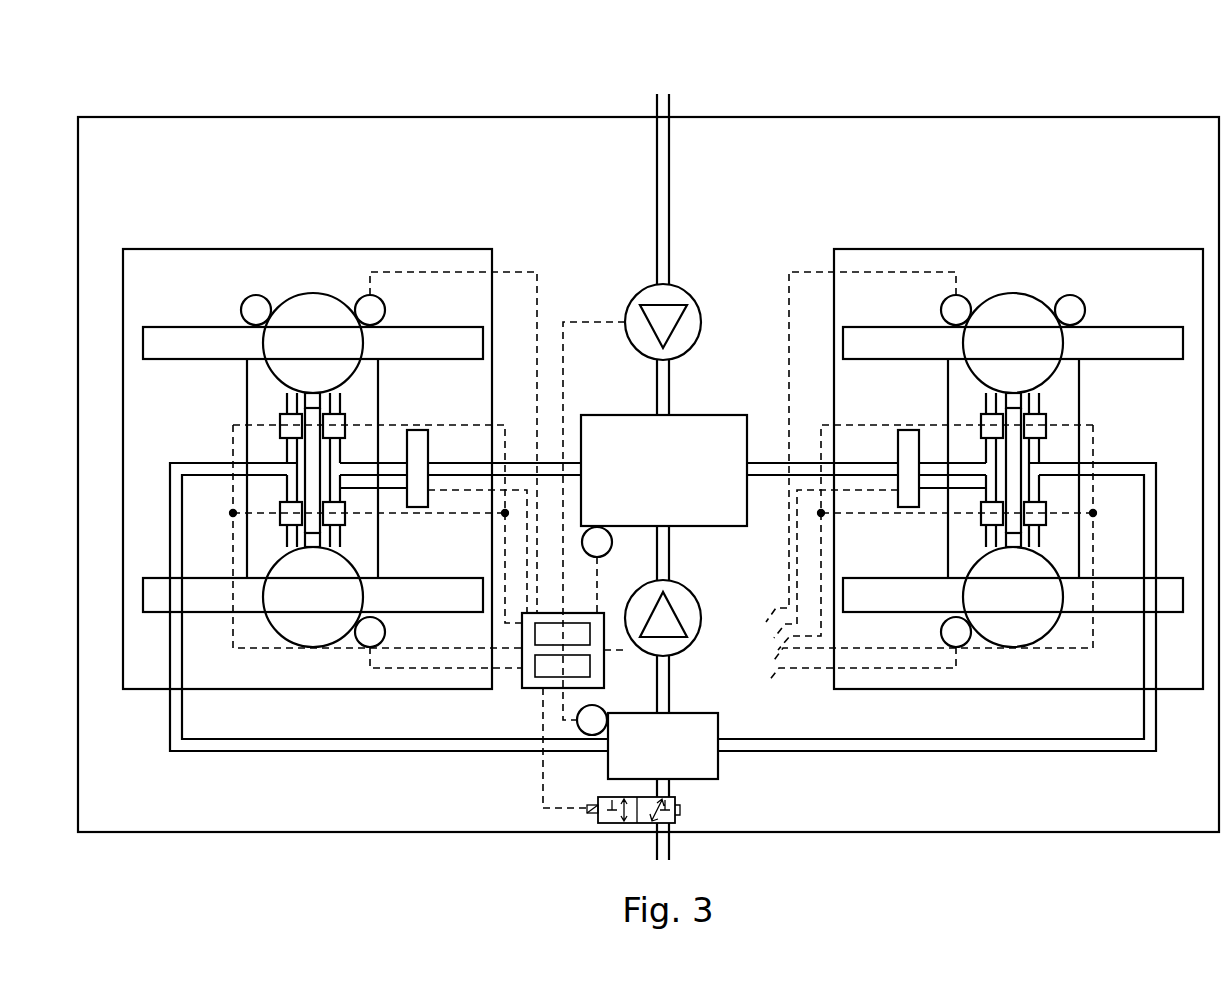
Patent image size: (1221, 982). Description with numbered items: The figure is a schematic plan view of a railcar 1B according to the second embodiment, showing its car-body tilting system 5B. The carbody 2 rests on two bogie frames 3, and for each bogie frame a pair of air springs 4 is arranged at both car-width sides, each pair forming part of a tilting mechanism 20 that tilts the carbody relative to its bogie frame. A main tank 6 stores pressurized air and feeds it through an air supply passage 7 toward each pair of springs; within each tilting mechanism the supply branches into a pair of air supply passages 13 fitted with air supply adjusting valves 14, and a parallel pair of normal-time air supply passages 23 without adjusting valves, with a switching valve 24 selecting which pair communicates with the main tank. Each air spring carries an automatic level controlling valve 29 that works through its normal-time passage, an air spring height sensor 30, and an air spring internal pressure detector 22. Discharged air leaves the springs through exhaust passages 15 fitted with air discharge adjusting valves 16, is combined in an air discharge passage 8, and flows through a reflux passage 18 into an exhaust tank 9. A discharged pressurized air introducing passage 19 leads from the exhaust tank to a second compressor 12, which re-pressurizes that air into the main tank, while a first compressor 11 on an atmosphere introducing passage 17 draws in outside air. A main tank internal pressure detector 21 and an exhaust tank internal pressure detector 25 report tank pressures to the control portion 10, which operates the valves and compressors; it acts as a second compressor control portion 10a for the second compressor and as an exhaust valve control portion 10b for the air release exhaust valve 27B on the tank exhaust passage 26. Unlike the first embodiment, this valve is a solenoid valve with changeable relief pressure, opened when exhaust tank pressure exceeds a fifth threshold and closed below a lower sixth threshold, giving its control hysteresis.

The railcar 1B is at (820, 85).
The carbody 2 is at (430, 117).
The bogie frame 3 is at (173, 338).
The air spring 4 is at (305, 298).
The car-body tilting system 5B is at (585, 300).
The main tank 6 is at (722, 527).
The air supply passage 7 is at (523, 460).
The air discharge passage 8 is at (425, 762).
The exhaust tank 9 is at (720, 722).
The control portion 10 is at (542, 673).
The second compressor control portion 10a is at (562, 634).
The exhaust valve control portion 10b is at (540, 690).
The first compressor 11 is at (702, 305).
The second compressor 12 is at (702, 617).
The air supply passage 13 is at (335, 402).
The air supply adjusting valve 14 is at (346, 428).
The exhaust passage 15 is at (287, 401).
The air discharge adjusting valve 16 is at (280, 430).
The atmosphere introducing passage 17 is at (668, 185).
The reflux passage 18 is at (290, 752).
The discharged pressurized air introducing passage 19 is at (672, 682).
The tilting mechanism 20 is at (168, 248).
The main tank internal pressure detector 21 is at (612, 552).
The air spring internal pressure detector 22 is at (386, 306).
The normal-time air supply passage 23 is at (318, 540).
The switching valve 24 is at (428, 446).
The exhaust tank internal pressure detector 25 is at (607, 713).
The tank exhaust passage 26 is at (672, 788).
The air release exhaust valve 27B is at (682, 798).
The automatic level controlling valve 29 is at (313, 395).
The air spring height sensor 30 is at (245, 308).